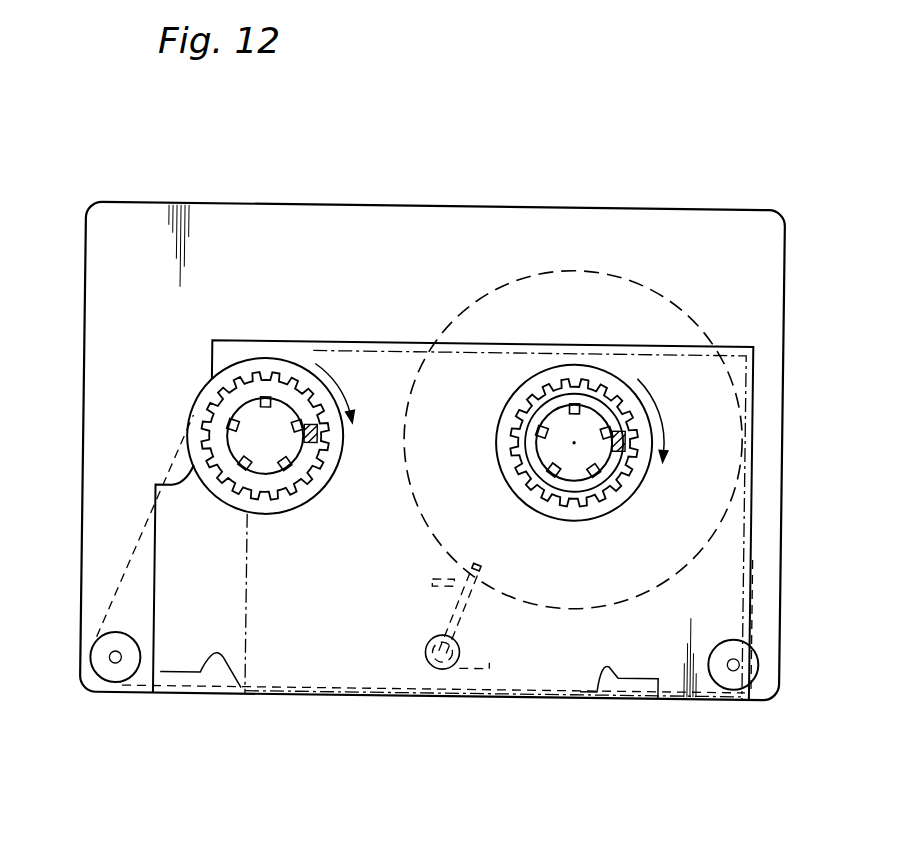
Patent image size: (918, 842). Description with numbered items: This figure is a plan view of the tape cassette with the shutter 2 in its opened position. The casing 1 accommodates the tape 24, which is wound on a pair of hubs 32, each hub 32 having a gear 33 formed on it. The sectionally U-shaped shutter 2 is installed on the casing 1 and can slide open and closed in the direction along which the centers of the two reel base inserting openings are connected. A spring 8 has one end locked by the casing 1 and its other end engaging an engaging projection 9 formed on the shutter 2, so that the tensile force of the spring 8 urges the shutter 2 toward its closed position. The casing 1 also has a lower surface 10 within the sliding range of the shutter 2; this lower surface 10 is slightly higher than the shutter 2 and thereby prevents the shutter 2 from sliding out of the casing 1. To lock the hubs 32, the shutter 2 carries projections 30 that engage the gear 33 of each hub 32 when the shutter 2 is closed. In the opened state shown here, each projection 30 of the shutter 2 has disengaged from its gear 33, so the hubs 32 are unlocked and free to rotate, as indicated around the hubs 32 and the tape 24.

The cassette case 1 is at (142, 222).
The base frame 2 is at (273, 675).
The lever 8 is at (477, 569).
The bracket 9 is at (435, 583).
The lid portion 10 is at (172, 541).
The tape roll 24 is at (763, 536).
The pawl clip 30 is at (302, 427).
The hub 32 is at (281, 370).
The ratchet gear 33 is at (251, 379).